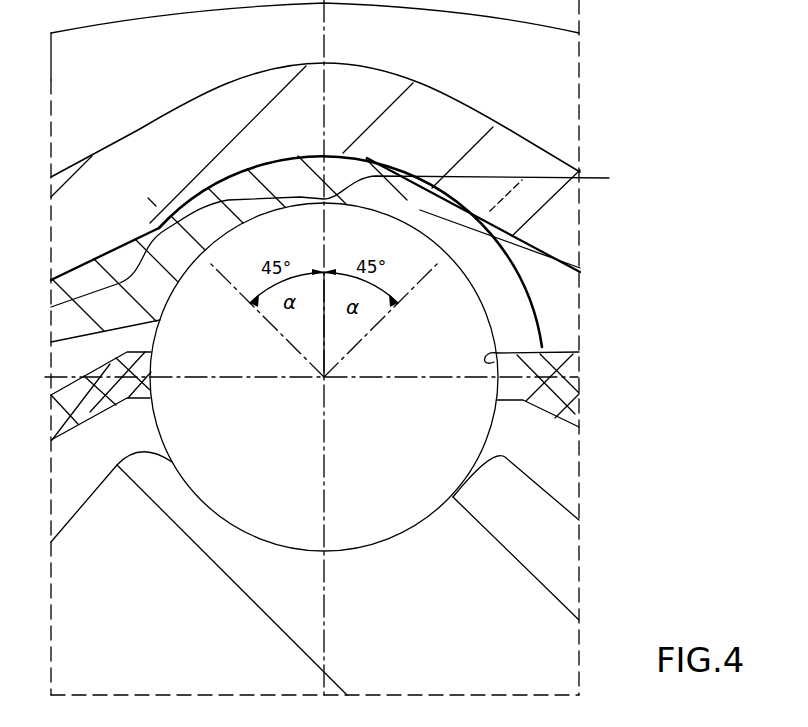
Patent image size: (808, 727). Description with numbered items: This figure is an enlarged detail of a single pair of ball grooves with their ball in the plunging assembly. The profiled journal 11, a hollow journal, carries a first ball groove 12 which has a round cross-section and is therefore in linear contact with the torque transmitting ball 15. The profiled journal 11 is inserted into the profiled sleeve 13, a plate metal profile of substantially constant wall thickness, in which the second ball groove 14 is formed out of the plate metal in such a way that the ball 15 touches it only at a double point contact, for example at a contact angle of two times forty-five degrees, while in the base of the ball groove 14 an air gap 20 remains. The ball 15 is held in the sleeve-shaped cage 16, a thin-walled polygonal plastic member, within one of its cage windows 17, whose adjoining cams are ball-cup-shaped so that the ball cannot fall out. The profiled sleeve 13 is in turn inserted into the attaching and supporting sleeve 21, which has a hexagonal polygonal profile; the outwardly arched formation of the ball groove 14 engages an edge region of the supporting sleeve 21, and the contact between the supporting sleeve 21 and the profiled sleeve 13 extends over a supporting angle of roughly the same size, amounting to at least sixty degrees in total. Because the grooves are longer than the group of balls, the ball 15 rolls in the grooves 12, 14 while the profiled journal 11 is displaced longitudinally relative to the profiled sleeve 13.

The profiled journal 11 is at (563, 567).
The first ball groove 12 is at (412, 520).
The profiled sleeve 13 is at (570, 322).
The second ball groove 14 is at (473, 278).
The torque transmitting ball 15 is at (470, 441).
The cage 16 is at (573, 422).
The cage window 17 is at (565, 363).
The air gap 20 is at (342, 238).
The supporting sleeve 21 is at (565, 212).